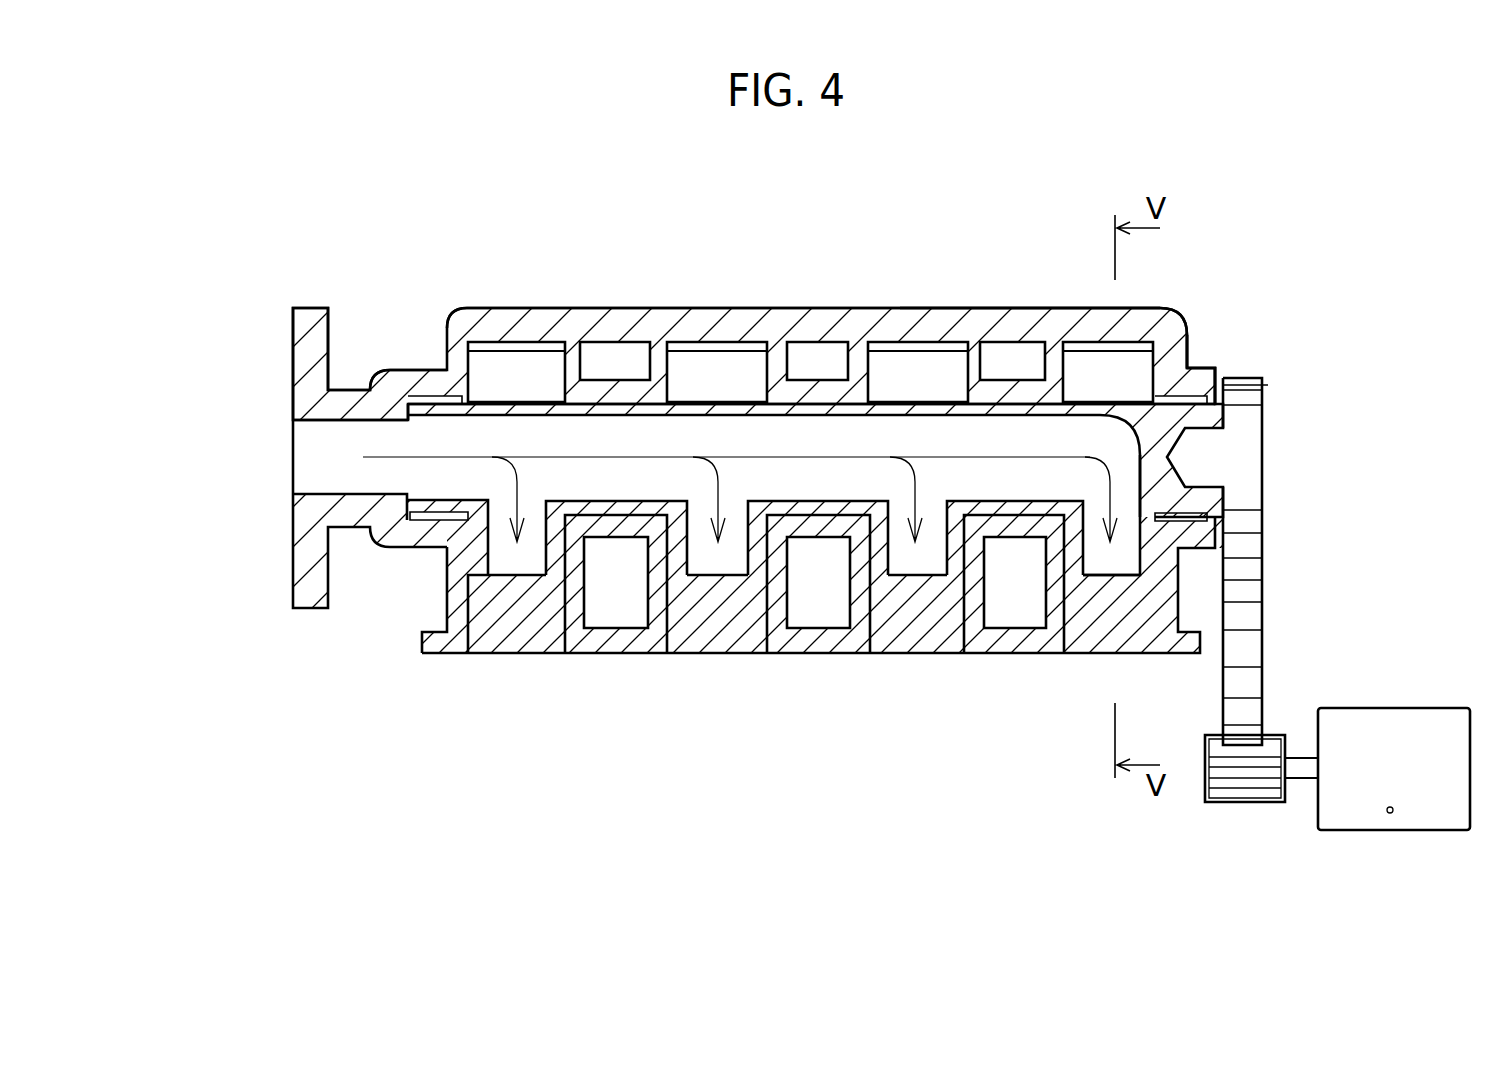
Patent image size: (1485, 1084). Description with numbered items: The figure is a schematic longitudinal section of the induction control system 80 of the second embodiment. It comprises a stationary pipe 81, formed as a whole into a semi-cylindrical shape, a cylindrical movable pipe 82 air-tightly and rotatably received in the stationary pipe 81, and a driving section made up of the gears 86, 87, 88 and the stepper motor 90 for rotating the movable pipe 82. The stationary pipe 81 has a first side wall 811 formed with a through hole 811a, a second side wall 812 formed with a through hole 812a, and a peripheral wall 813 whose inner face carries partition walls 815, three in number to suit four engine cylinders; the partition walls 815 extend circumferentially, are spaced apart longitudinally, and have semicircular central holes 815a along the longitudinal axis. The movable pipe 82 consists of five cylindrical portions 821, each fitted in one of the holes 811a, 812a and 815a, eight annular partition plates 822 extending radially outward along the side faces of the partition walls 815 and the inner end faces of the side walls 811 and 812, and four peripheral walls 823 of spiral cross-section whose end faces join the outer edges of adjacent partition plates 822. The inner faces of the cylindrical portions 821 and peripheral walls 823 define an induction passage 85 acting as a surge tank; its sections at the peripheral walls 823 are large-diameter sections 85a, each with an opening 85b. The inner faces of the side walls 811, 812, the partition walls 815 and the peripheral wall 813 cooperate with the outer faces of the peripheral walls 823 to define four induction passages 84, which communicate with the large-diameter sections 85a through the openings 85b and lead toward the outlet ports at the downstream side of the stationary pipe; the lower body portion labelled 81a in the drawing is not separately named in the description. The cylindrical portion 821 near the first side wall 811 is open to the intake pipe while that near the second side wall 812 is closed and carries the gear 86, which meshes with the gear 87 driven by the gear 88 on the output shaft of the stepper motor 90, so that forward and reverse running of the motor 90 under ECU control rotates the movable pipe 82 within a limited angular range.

The induction control system 80 is at (497, 293).
The stationary pipe 81 is at (633, 300).
The rotor yoke 81a is at (498, 657).
The movable pipe 82 is at (695, 392).
The induction passages 84 is at (522, 350).
The induction passage 85 is at (897, 437).
The large-diameter sections 85a is at (505, 567).
The opening 85b is at (1085, 577).
The gear 86 is at (1255, 520).
The gear 87 is at (1252, 583).
The gear 88 is at (1246, 790).
The stepper motor 90 is at (1395, 708).
The first side wall 811 is at (300, 578).
The through hole 811a is at (337, 492).
The second side wall 812 is at (1168, 345).
The through hole 812a is at (1213, 393).
The peripheral wall 813 is at (1033, 312).
The partition walls 815 is at (615, 380).
The central holes 815a is at (800, 380).
The cylindrical portions 821 is at (420, 520).
The annular partition plates 822 is at (477, 568).
The peripheral walls 823 is at (502, 400).